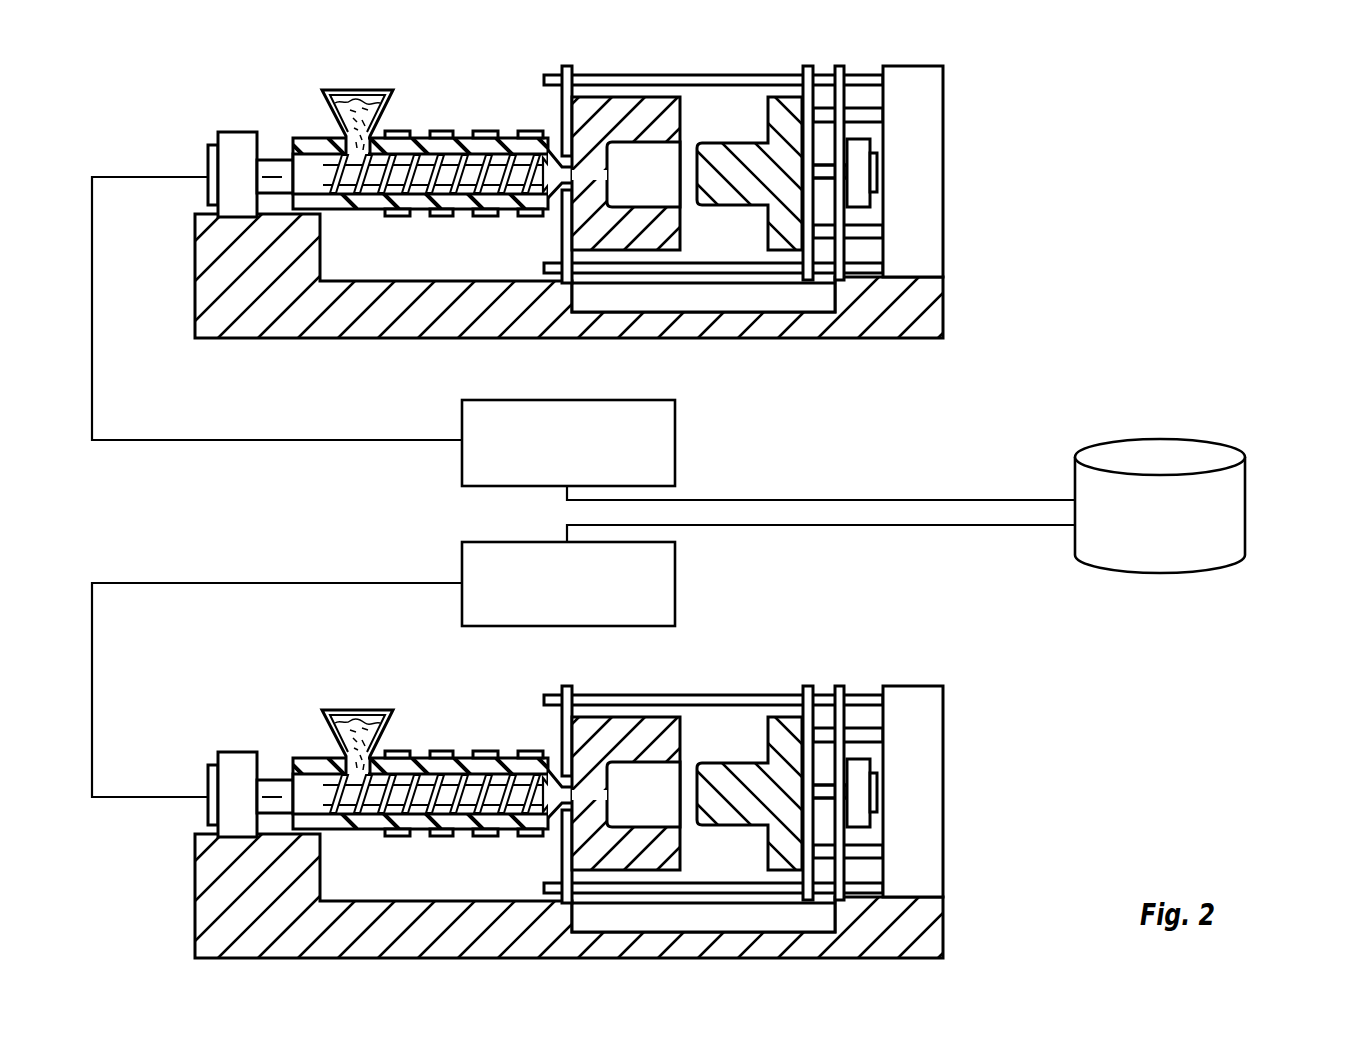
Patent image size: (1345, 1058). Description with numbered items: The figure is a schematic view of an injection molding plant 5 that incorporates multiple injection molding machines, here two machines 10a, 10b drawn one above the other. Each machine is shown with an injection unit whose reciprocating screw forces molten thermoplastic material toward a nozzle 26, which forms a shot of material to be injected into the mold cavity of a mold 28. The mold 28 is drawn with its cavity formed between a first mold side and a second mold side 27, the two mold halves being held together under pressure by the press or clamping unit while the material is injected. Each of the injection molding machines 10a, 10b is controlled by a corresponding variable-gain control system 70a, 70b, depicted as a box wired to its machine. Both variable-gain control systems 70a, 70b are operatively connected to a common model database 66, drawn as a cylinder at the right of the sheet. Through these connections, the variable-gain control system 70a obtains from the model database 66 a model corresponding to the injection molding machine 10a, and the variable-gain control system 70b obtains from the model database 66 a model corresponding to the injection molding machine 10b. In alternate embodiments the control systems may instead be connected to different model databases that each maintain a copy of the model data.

The injection molding plant 5 is at (120, 549).
The injection molding machine 10a is at (462, 84).
The injection molding machine 10b is at (462, 704).
The nozzle 26 is at (557, 165).
The second mold side 27 is at (742, 197).
The mold 28 is at (683, 94).
The model database 66 is at (1245, 492).
The variable-gain control system 70a is at (675, 438).
The variable-gain control system 70b is at (675, 580).